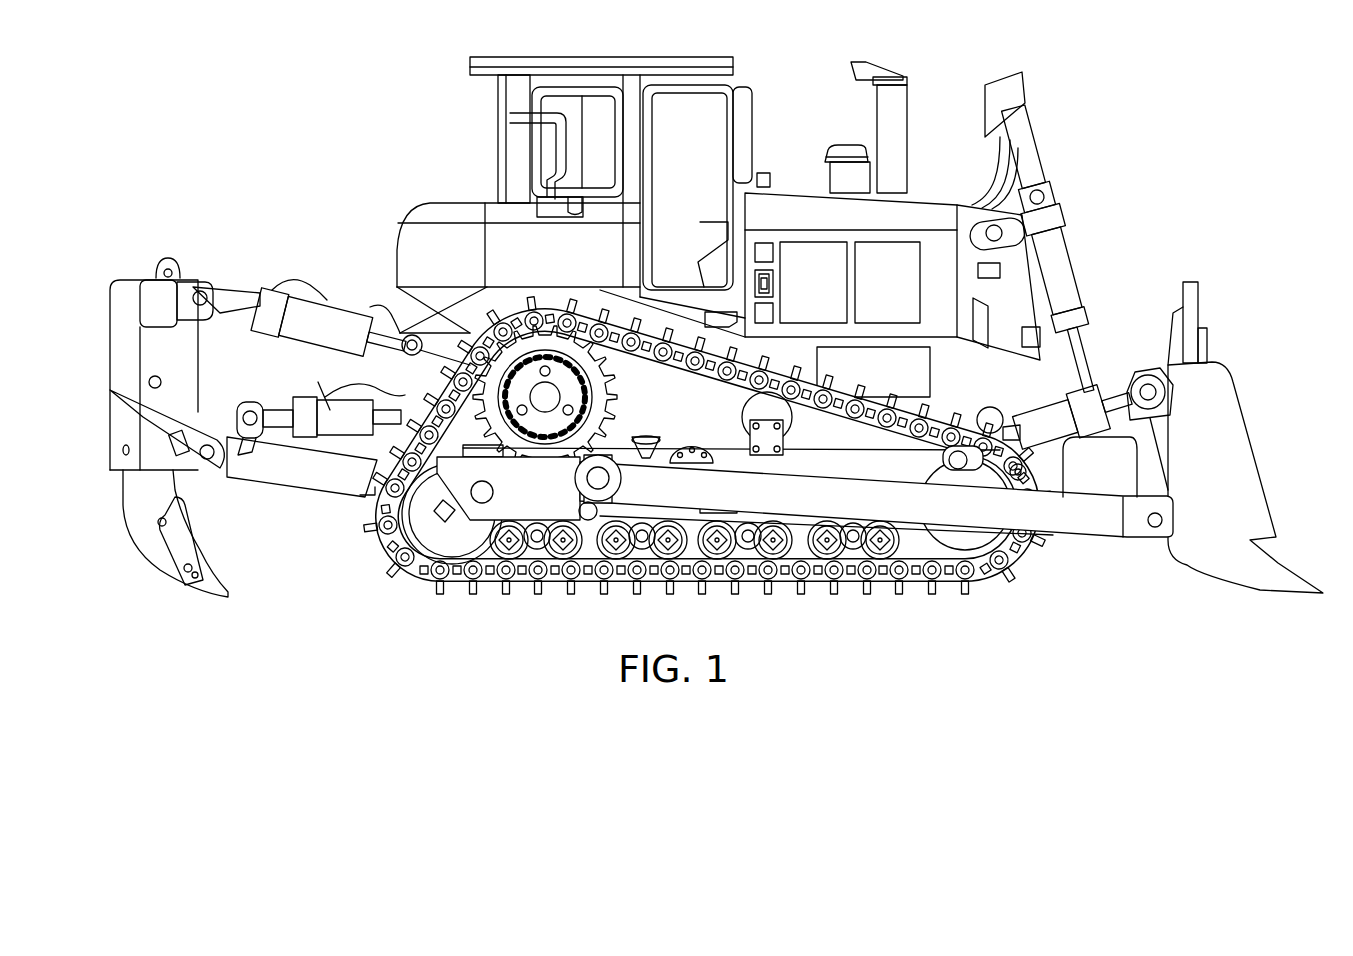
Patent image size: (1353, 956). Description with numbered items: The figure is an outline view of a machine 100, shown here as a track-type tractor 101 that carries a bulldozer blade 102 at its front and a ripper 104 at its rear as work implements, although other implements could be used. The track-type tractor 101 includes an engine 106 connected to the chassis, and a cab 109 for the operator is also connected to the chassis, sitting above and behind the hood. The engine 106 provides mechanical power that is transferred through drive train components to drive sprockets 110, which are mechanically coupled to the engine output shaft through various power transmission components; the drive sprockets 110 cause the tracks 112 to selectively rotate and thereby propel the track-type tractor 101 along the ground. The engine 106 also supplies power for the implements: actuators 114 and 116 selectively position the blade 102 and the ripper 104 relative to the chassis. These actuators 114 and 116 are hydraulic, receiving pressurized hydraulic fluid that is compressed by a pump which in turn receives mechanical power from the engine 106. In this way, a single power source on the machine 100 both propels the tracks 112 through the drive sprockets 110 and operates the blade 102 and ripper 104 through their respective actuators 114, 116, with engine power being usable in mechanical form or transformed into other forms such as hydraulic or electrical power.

The machine 100 is at (1217, 233).
The track-type tractor 101 is at (423, 210).
The bulldozer blade 102 is at (1233, 427).
The ripper 104 is at (122, 347).
The engine 106 is at (900, 255).
The cab 109 is at (695, 115).
The drive sprockets 110 is at (543, 390).
The tracks 112 is at (385, 545).
The actuator 114 is at (1070, 257).
The actuator 116 is at (317, 325).